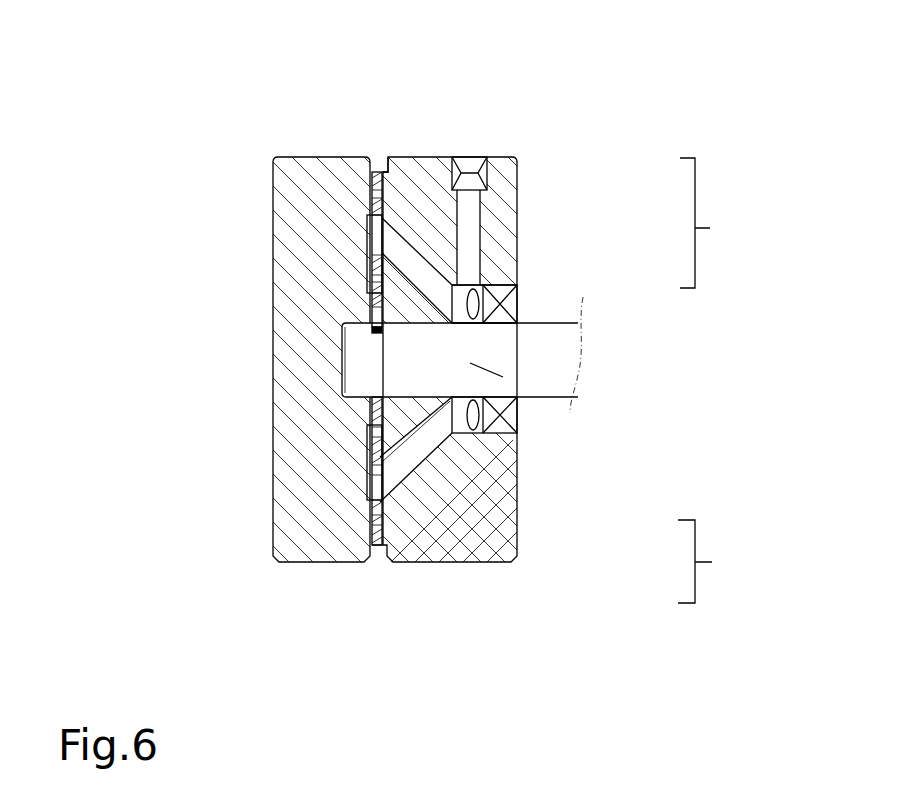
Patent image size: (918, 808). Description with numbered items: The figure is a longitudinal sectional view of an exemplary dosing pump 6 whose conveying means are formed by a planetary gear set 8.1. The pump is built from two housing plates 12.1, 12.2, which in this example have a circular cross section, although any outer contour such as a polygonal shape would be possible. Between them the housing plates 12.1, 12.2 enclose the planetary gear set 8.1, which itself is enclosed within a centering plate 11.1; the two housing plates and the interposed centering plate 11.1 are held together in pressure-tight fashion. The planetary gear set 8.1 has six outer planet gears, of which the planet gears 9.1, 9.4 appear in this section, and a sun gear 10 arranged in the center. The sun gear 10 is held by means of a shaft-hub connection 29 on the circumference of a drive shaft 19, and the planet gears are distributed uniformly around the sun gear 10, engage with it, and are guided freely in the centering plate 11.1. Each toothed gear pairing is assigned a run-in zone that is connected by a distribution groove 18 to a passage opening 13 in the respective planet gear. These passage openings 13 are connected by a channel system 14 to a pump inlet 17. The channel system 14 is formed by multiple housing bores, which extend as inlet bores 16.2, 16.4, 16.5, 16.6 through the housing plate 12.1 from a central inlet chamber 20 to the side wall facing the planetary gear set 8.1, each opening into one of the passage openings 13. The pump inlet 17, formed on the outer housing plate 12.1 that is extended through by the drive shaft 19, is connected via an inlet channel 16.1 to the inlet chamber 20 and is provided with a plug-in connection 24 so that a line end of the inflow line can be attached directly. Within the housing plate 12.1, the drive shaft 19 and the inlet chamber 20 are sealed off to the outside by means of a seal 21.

The dosing pump 6 is at (308, 588).
The planetary gear set 8.1 is at (373, 292).
The planet gear 9.1 is at (372, 202).
The planet gear 9.4 is at (373, 507).
The sun gear 10 is at (373, 422).
The centering plate 11.1 is at (382, 165).
The housing plate 12.1 is at (410, 160).
The housing plate 12.2 is at (310, 168).
The passage opening 13 is at (373, 230).
The channel system 14 is at (607, 380).
The inlet channel 16.1 is at (465, 223).
The inlet bore 16.2 is at (465, 265).
The inlet bore 16.4 is at (380, 502).
The inlet bore 16.5 is at (483, 437).
The inlet bore 16.6 is at (480, 296).
The pump inlet 17 is at (474, 158).
The distribution groove 18 is at (373, 288).
The drive shaft 19 is at (560, 380).
The inlet chamber 20 is at (517, 308).
The seal 21 is at (503, 323).
The plug-in connection 24 is at (490, 180).
The shaft-hub connection 29 is at (503, 377).